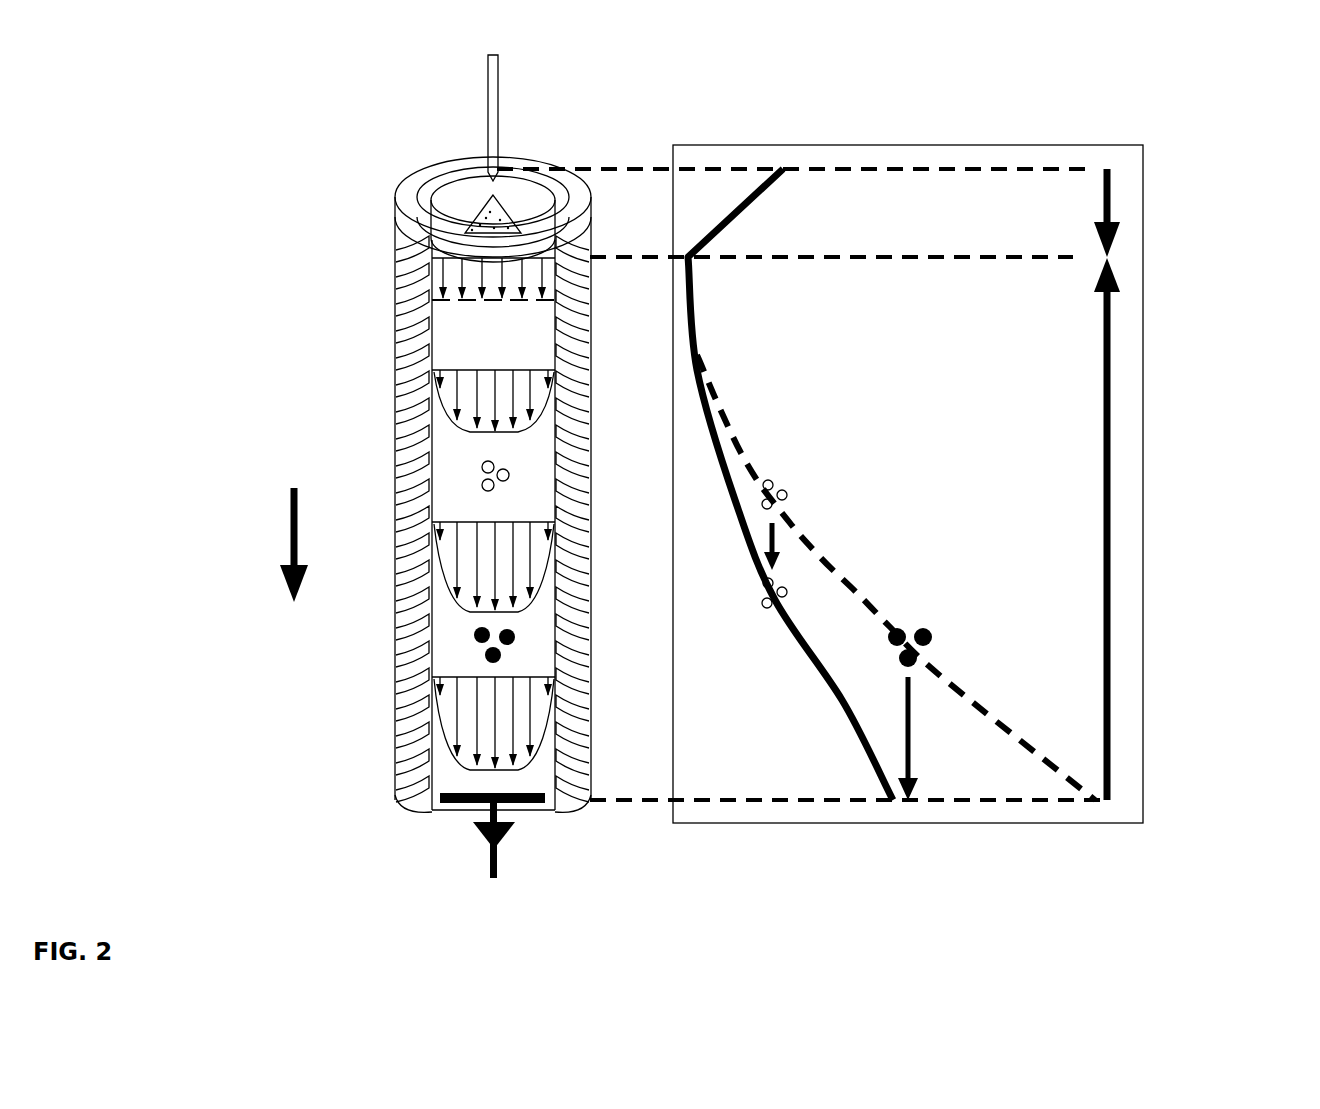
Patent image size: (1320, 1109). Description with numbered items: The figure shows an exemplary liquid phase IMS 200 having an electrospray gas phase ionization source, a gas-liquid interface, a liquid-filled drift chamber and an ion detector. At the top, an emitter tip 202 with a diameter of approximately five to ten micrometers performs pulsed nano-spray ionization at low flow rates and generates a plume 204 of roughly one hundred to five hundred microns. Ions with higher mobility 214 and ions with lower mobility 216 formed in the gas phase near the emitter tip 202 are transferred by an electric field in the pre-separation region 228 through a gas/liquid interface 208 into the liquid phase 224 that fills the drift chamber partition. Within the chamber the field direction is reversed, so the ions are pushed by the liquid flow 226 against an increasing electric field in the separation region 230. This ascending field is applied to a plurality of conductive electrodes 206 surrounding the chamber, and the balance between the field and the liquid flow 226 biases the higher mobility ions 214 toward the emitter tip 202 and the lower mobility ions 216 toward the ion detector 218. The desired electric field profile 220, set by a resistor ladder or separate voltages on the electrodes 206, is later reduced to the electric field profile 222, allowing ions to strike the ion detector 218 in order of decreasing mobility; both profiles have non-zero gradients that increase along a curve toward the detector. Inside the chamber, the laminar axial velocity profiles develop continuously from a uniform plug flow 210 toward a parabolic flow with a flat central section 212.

The liquid phase IMS 200 is at (315, 447).
The emitter tip 202 is at (502, 74).
The plume 204 is at (514, 214).
The conductive electrodes 206 is at (398, 203).
The gas/liquid interface 208 is at (453, 245).
The uniform plug flow 210 is at (452, 305).
The parabolic flow with a flat central section 212 is at (450, 755).
The ions with higher mobility 214 is at (482, 476).
The ions with lower mobility 216 is at (478, 653).
The ion detector 218 is at (455, 808).
The electric field profile 220 is at (853, 583).
The electric field profile 222 is at (840, 723).
The liquid phase 224 is at (458, 352).
The liquid flow 226 is at (280, 528).
The pre-separation region 228 is at (1110, 198).
The separation region 230 is at (1110, 482).